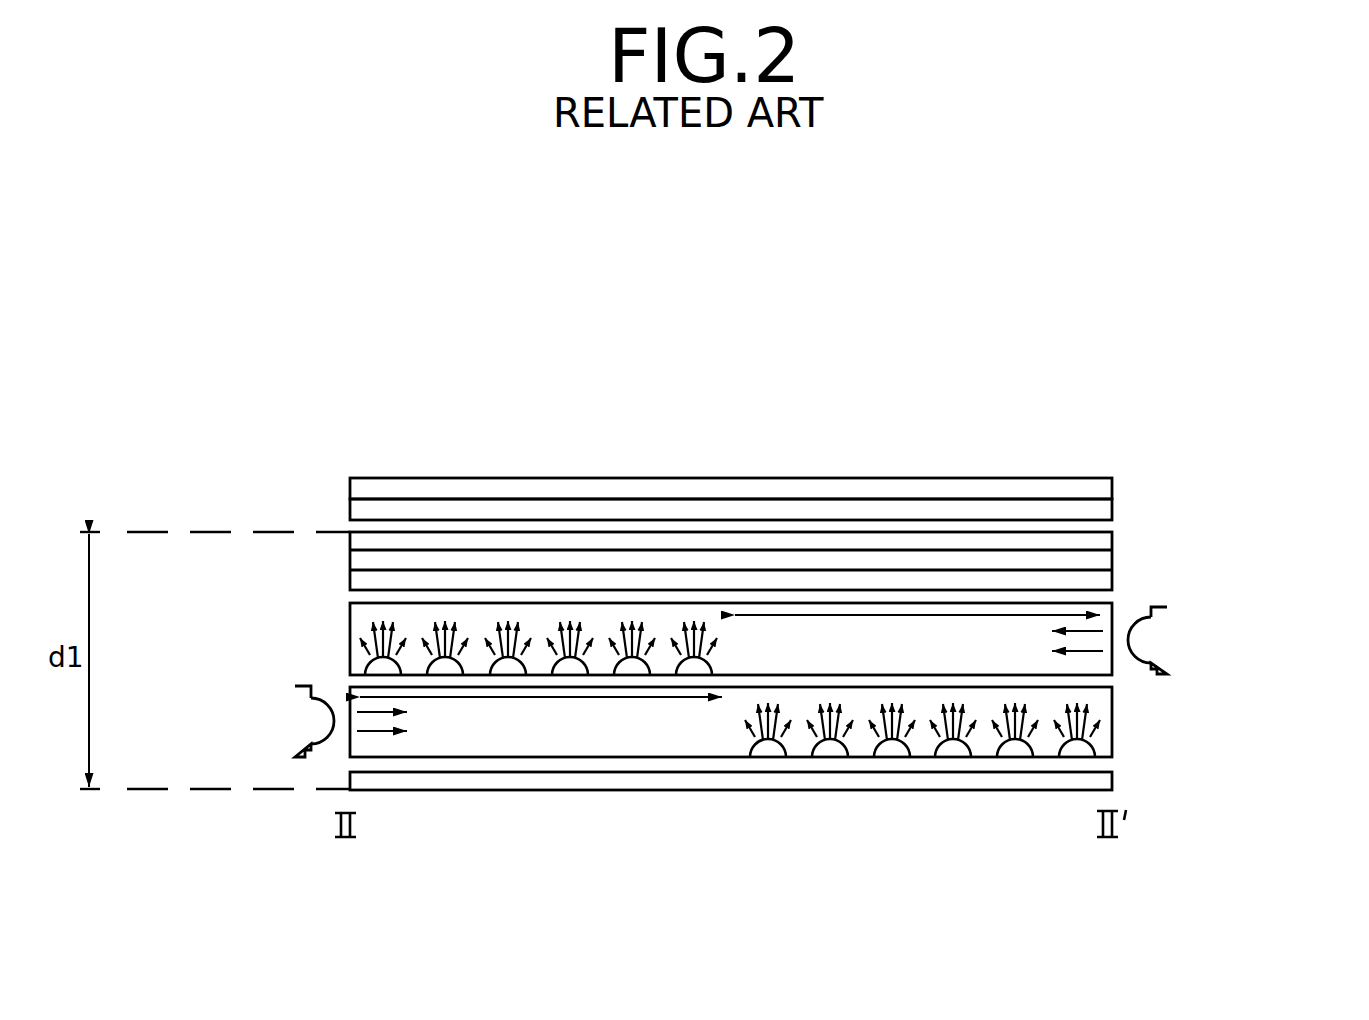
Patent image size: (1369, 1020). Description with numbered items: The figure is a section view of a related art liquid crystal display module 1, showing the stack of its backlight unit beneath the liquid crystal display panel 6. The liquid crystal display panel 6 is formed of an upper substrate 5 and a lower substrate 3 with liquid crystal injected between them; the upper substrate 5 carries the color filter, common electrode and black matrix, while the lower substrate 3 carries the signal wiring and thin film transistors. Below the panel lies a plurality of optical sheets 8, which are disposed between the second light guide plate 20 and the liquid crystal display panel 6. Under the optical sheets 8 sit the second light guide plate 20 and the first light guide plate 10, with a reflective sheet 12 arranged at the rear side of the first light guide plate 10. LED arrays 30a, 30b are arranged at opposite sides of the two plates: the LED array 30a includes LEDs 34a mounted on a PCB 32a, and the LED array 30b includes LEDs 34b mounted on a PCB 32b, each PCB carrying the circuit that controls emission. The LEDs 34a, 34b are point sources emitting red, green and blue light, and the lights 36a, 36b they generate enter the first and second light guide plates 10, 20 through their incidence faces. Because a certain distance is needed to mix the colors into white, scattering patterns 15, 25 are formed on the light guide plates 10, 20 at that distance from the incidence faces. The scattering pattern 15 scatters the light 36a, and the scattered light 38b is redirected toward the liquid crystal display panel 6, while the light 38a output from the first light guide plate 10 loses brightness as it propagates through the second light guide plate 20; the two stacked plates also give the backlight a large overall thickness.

The liquid crystal display module 1 is at (1110, 428).
The lower substrate 3 is at (761, 514).
The upper substrate 5 is at (1113, 488).
The liquid crystal display panel 6 is at (781, 496).
The optical sheets 8 is at (1113, 546).
The first light guide plate 10 is at (1113, 738).
The reflective sheet 12 is at (1113, 780).
The scattering patterns 15 is at (953, 757).
The second light guide plate 20 is at (350, 643).
The scattering patterns 25 is at (513, 675).
The LED array 30a is at (224, 715).
The PCB 32a is at (296, 692).
The LED 34a is at (334, 721).
The light 36a is at (377, 732).
The light 38a is at (848, 733).
The LED array 30b is at (1230, 633).
The PCB 32b is at (1166, 611).
The LED 34b is at (1128, 641).
The light 36b is at (1090, 651).
The scattered light 38b is at (589, 645).